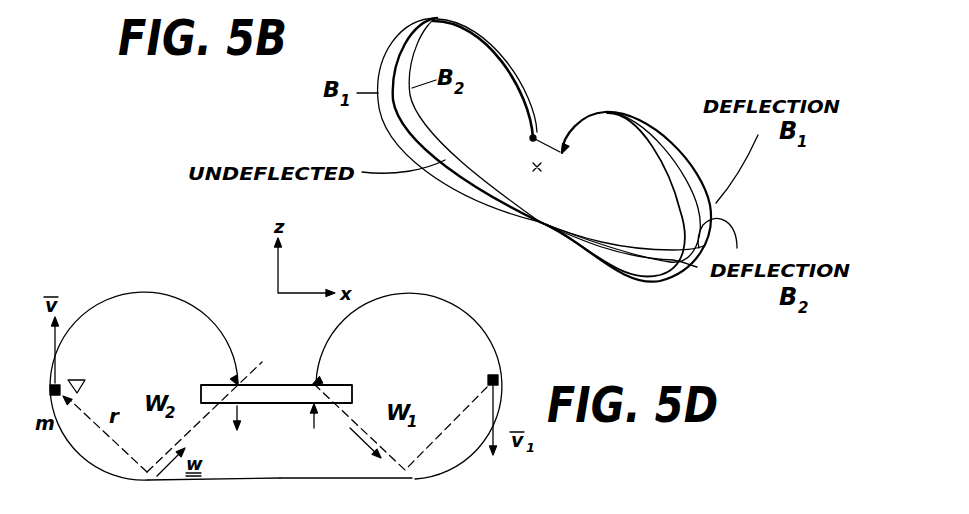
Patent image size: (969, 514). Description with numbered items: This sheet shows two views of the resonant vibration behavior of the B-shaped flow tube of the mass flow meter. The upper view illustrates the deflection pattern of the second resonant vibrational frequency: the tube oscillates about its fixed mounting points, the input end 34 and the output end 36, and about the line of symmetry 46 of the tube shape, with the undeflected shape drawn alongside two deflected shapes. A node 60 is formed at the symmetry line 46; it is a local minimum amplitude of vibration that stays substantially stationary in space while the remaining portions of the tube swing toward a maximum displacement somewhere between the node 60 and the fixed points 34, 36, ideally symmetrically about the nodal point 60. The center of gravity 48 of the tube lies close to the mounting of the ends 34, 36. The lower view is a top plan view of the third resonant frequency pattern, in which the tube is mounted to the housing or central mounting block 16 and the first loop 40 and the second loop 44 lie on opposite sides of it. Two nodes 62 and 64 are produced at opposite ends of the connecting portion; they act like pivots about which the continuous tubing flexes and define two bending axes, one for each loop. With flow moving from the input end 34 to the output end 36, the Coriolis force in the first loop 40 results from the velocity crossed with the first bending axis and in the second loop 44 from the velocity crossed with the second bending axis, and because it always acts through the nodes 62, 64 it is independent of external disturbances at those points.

In FIG. 5D, the housing or central mounting block 16 is at (272, 392).
In FIG. 5B, the end of flow tube (input end) 34 is at (526, 142).
In FIG. 5D, the end of flow tube (input end) 34 is at (314, 383).
In FIG. 5B, the end of flow tube (output end) 36 is at (593, 133).
In FIG. 5D, the end of flow tube (output end) 36 is at (237, 384).
In FIG. 5D, the first loop or deflection arm portion 40 is at (448, 379).
In FIG. 5D, the second loop 44 is at (140, 359).
In FIG. 5B, the center line or line of symmetry of the flow tube 46 is at (553, 113).
In FIG. 5B, the center of gravity of the flow tube 48 is at (543, 170).
In FIG. 5B, the node 60 is at (535, 221).
In FIG. 5D, the node 62 is at (412, 478).
In FIG. 5D, the node 64 is at (148, 480).